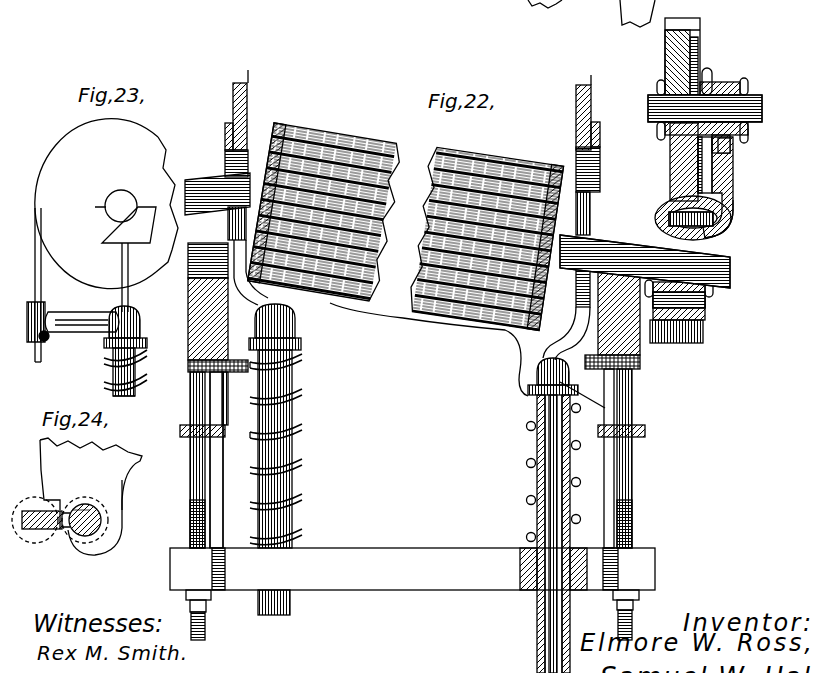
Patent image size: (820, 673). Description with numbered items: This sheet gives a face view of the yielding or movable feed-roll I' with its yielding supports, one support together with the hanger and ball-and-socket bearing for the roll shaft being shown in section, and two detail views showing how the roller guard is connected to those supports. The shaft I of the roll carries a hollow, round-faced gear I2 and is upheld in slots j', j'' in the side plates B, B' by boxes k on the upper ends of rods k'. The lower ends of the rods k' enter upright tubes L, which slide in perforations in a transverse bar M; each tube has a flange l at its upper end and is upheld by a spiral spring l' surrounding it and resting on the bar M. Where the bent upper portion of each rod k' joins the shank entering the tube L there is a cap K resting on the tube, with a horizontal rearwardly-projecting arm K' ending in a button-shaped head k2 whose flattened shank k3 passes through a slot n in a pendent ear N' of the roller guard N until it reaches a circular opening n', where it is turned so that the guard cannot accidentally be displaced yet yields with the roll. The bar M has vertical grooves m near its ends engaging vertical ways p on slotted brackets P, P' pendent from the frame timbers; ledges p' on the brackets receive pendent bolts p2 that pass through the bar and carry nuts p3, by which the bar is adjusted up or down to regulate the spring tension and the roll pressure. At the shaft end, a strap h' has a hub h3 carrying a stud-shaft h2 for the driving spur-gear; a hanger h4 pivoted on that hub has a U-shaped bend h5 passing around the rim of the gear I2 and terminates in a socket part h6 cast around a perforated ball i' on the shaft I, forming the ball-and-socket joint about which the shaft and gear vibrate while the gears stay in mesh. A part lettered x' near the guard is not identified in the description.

In FIG. 23, the feed-roll shaft I is at (121, 206).
In FIG. 22, the feed-roll shaft I is at (651, 261).
In FIG. 23, the yielding feed-roll I' is at (106, 204).
In FIG. 22, the yielding feed-roll I' is at (406, 227).
In FIG. 22, the round-faced gear-wheel I2 is at (704, 332).
In FIG. 22, the perforated ball i' is at (463, 213).
In FIG. 22, the side-plate slot j' is at (222, 150).
In FIG. 22, the side-plate slot j'' is at (608, 245).
In FIG. 22, the side plate B is at (249, 110).
In FIG. 22, the side plate B' is at (593, 112).
In FIG. 23, the box k is at (125, 225).
In FIG. 22, the box k is at (392, 276).
In FIG. 23, the rod k' is at (137, 277).
In FIG. 22, the rod k' is at (375, 301).
In FIG. 23, the button-shaped head k2 is at (47, 306).
In FIG. 23, the flattened shank k3 is at (50, 339).
In FIG. 24, the flattened shank k3 is at (86, 506).
In FIG. 23, the cap K is at (136, 351).
In FIG. 22, the cap K is at (413, 488).
In FIG. 23, the arm K' is at (82, 312).
In FIG. 23, the flange l is at (136, 355).
In FIG. 22, the flange l is at (388, 390).
In FIG. 23, the spiral spring l' is at (137, 380).
In FIG. 22, the spiral spring l' is at (388, 470).
In FIG. 23, the tube L is at (134, 394).
In FIG. 22, the tube L is at (292, 394).
In FIG. 23, the roller guard N is at (28, 285).
In FIG. 24, the roller guard N is at (91, 496).
In FIG. 22, the roller guard N is at (465, 357).
In FIG. 23, the pendent ear N' is at (39, 375).
In FIG. 24, the pendent ear N' is at (135, 495).
In FIG. 22, the pendent ear N' is at (546, 390).
In FIG. 24, the slot n is at (41, 535).
In FIG. 24, the circular opening n' is at (106, 520).
In FIG. 22, the connection x' is at (351, 321).
In FIG. 22, the slotted bracket P is at (634, 458).
In FIG. 22, the slotted bracket P' is at (218, 454).
In FIG. 22, the vertical way p is at (223, 460).
In FIG. 22, the ledge p' is at (425, 436).
In FIG. 22, the pendent bolt p2 is at (198, 482).
In FIG. 22, the nut p3 is at (210, 598).
In FIG. 22, the transverse supporting-bar M is at (412, 569).
In FIG. 22, the vertical groove m is at (226, 572).
In FIG. 22, the strap h' is at (709, 141).
In FIG. 22, the stud-shaft h2 is at (700, 40).
In FIG. 22, the hub h3 is at (712, 76).
In FIG. 22, the hanger h4 is at (726, 170).
In FIG. 22, the U-shaped bend h5 is at (735, 216).
In FIG. 22, the socket part h6 is at (660, 213).